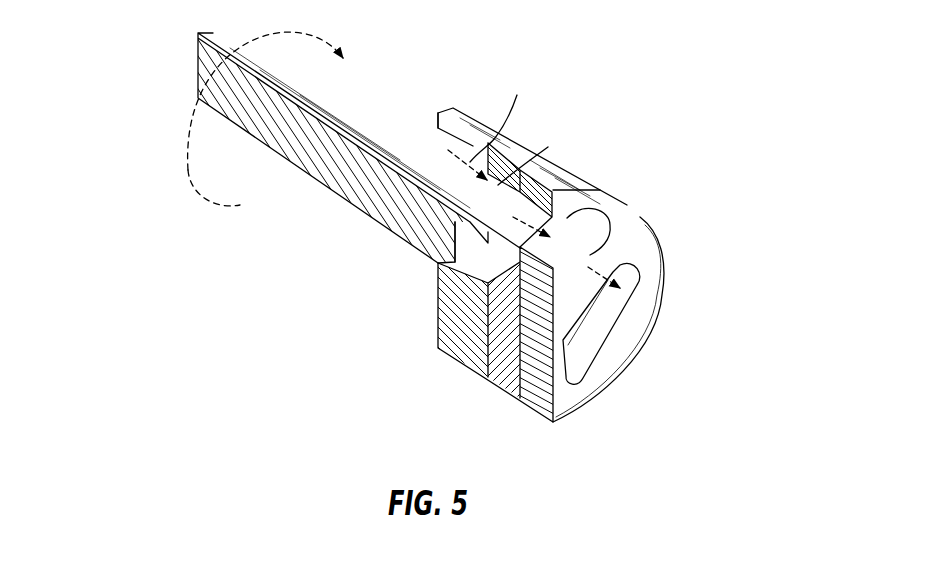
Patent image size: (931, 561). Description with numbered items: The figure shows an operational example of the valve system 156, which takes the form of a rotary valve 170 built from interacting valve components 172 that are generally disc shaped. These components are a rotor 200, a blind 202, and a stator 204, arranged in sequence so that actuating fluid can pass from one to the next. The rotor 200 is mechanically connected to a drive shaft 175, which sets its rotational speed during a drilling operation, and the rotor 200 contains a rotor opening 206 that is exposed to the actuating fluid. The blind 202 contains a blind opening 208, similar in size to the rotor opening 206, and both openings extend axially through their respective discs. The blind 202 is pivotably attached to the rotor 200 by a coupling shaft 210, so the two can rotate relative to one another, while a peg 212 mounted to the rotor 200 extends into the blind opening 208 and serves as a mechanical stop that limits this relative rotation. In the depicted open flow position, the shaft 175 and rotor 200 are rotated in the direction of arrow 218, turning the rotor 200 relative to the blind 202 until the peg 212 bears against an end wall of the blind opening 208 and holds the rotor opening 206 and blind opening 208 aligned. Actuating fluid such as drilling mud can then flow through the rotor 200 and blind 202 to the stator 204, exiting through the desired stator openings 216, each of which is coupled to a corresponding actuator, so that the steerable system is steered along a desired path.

The valve system 156 is at (687, 64).
The rotary valve 170 is at (615, 432).
The interacting valve components 172 is at (457, 361).
The drive shaft 175 is at (317, 177).
The rotor 200 is at (462, 110).
The blind 202 is at (570, 167).
The stator 204 is at (640, 220).
The rotor opening 206 is at (443, 147).
The blind opening 208 is at (505, 112).
The coupling shaft 210 is at (468, 252).
The peg 212 is at (538, 150).
The stator openings 216 is at (580, 236).
The arrow 218 is at (186, 168).